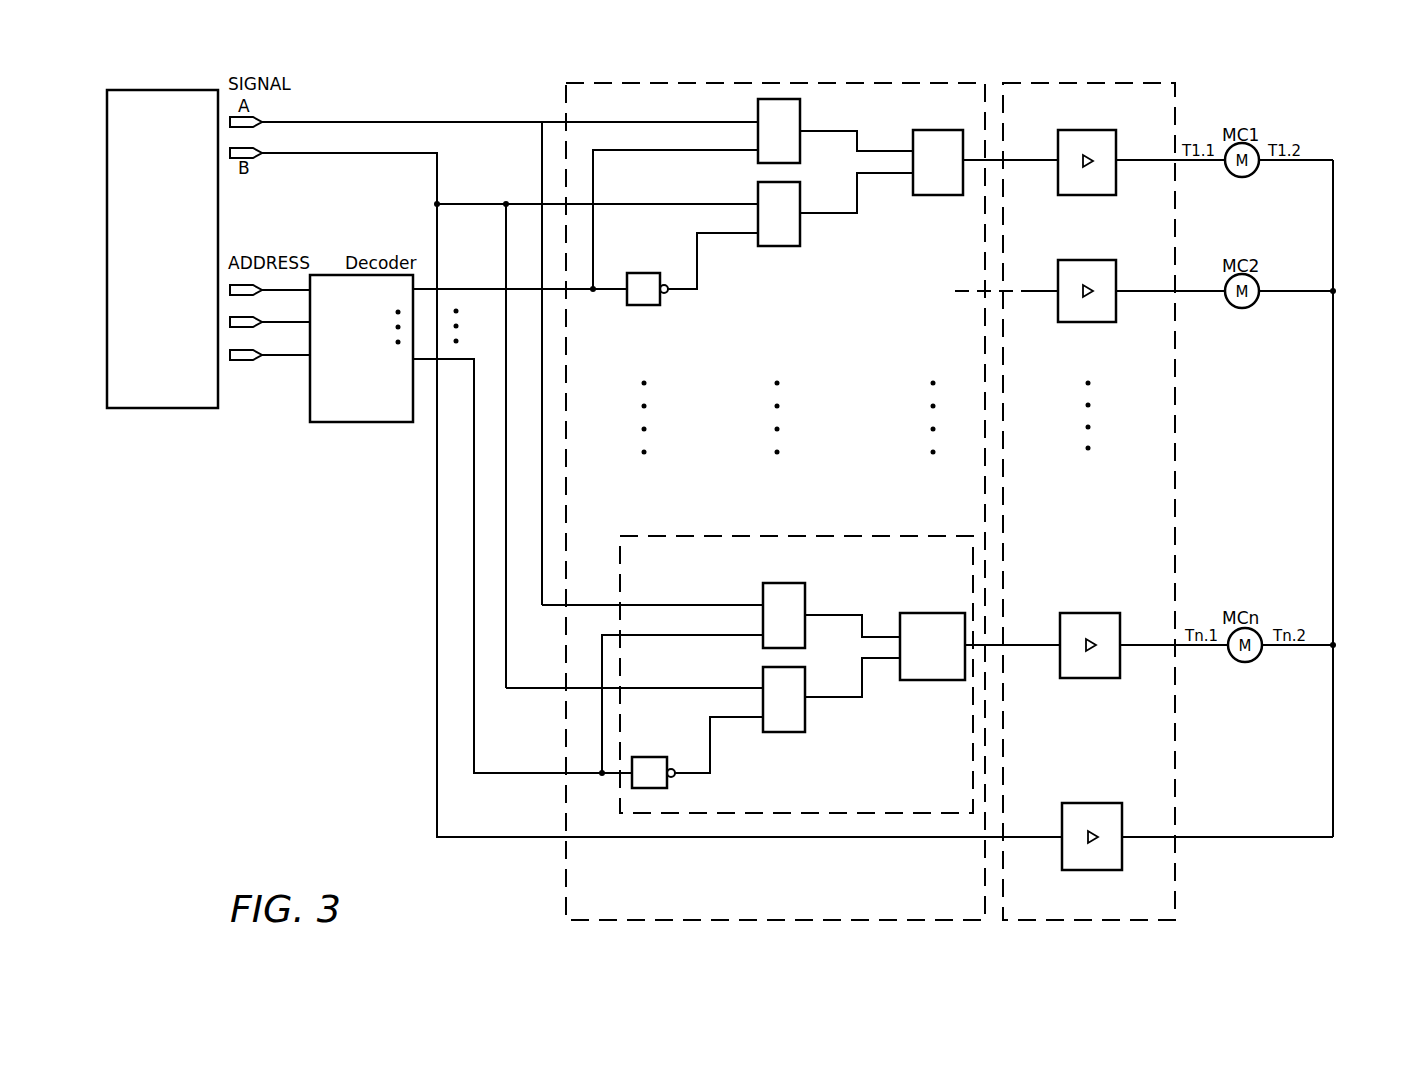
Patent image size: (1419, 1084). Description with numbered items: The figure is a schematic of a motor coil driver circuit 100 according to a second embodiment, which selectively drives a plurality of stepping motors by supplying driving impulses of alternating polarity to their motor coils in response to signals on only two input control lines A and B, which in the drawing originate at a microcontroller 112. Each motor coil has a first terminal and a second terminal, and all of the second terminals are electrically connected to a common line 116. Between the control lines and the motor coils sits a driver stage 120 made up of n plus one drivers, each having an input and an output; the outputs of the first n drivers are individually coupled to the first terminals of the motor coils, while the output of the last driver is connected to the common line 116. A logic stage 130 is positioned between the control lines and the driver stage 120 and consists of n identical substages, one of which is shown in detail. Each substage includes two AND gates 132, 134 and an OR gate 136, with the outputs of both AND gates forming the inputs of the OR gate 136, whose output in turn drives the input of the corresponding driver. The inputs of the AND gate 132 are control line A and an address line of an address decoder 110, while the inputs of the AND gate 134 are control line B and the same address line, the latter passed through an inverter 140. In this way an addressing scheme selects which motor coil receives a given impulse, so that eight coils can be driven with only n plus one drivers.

The motor coil driver circuit 100 is at (356, 655).
The address decoder 110 is at (355, 423).
The microcontroller 112 is at (167, 410).
The common line 116 is at (1333, 462).
The driver stage 120 is at (1057, 180).
The logic stage 130 is at (573, 910).
The AND gate 132 is at (800, 102).
The AND gate 134 is at (780, 248).
The OR gate 136 is at (927, 197).
The inverter 140 is at (652, 308).